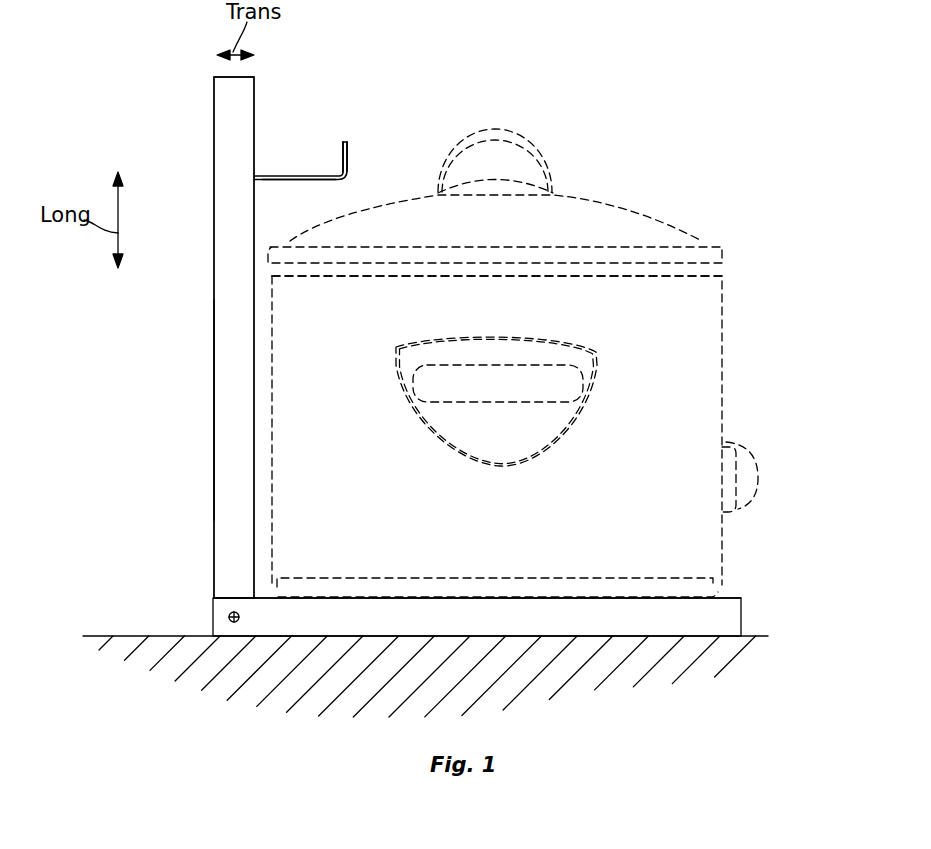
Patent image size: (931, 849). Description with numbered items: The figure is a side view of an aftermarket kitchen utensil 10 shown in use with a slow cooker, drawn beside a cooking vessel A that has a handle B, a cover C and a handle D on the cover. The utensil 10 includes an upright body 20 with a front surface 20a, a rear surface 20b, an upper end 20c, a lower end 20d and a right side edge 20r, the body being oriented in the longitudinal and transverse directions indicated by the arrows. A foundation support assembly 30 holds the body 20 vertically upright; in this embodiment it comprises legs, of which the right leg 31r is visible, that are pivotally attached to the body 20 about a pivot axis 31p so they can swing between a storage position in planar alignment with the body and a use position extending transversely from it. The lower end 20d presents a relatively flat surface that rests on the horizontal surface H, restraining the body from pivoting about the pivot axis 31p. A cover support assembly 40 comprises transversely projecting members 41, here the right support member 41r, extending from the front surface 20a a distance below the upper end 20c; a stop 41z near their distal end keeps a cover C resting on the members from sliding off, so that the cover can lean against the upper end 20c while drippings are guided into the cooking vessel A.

The utensil 10 is at (338, 72).
The body 20 is at (214, 152).
The front surface of body 20a is at (254, 110).
The rear surface of body 20b is at (214, 291).
The upper end of body 20c is at (224, 73).
The lower end of body 20d is at (236, 637).
The right side edge of body 20r is at (221, 411).
The foundation support assembly 30 is at (741, 608).
The pivot axis of legs 31p is at (228, 617).
The right leg 31r is at (512, 628).
The cover support assembly 40 is at (346, 169).
The transversely projecting members 41 is at (285, 181).
The right support member 41r is at (318, 181).
The stop 41z is at (349, 143).
The cooking vessel A is at (317, 478).
The handle on cooking vessel B is at (505, 395).
The cover of cooking vessel C is at (580, 229).
The handle on cover D is at (522, 137).
The horizontal surface H is at (460, 681).